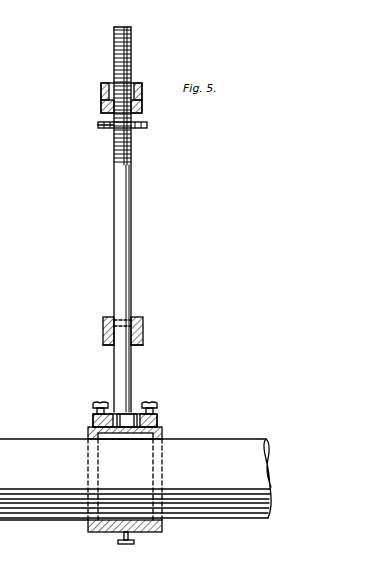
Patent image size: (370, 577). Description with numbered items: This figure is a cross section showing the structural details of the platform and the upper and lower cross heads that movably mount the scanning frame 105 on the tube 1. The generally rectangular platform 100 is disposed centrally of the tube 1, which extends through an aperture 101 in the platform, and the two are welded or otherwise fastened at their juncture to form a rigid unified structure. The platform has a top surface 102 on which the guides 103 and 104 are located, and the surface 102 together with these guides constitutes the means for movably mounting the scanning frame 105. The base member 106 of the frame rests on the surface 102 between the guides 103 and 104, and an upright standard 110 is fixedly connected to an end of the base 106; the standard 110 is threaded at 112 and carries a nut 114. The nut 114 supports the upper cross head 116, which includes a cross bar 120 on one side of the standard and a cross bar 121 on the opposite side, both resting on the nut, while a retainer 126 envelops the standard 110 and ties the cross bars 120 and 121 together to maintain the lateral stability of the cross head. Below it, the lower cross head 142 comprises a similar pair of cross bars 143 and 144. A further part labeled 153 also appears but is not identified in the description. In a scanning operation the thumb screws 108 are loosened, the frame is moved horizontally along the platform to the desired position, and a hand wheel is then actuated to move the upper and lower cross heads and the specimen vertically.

The tube 1 is at (33, 521).
The platform 100 is at (145, 533).
The aperture 101 is at (162, 441).
The top surface 102 is at (163, 428).
The guide 103 is at (93, 418).
The guide 104 is at (156, 418).
The scanning frame 105 is at (138, 291).
The base member 106 is at (131, 439).
The thumb screws 108 is at (100, 402).
The upright standard 110 is at (132, 231).
The threaded portion 112 is at (131, 45).
The nut 114 is at (147, 125).
The upper cross head 116 is at (100, 84).
The cross bar 120 is at (101, 100).
The cross bar 121 is at (142, 104).
The retainer 126 is at (141, 96).
The lower cross head 142 is at (144, 330).
The cross bar 143 is at (103, 333).
The cross bar 144 is at (143, 343).
The washer face 153 is at (98, 126).